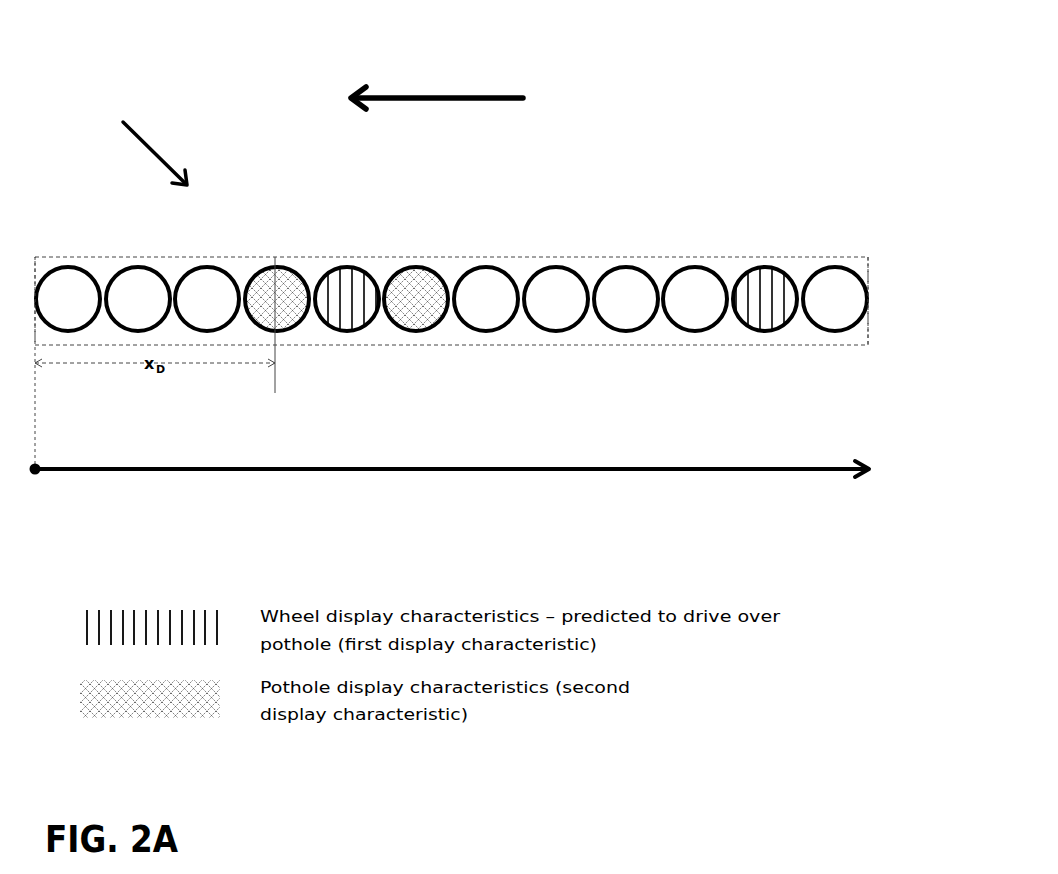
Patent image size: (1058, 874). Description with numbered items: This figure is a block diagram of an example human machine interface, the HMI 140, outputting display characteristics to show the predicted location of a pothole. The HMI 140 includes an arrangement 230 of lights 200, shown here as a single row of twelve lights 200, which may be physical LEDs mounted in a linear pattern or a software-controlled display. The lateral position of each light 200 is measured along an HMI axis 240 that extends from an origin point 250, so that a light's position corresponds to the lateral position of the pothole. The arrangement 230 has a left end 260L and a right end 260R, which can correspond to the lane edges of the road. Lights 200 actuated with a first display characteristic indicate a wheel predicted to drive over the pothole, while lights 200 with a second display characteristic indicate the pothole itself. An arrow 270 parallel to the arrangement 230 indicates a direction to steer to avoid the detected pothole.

The HMI 140 is at (133, 133).
The light 200 is at (51, 310).
The arrangement 230 is at (805, 345).
The HMI axis 240 is at (655, 470).
The origin point 250 is at (37, 465).
The left end 260L is at (36, 258).
The right end 260R is at (867, 258).
The arrow 270 is at (466, 97).